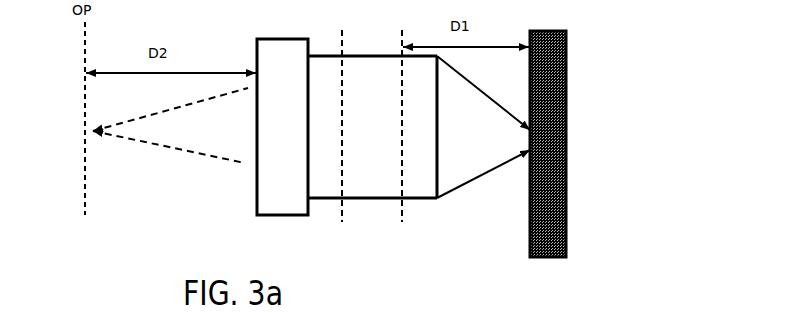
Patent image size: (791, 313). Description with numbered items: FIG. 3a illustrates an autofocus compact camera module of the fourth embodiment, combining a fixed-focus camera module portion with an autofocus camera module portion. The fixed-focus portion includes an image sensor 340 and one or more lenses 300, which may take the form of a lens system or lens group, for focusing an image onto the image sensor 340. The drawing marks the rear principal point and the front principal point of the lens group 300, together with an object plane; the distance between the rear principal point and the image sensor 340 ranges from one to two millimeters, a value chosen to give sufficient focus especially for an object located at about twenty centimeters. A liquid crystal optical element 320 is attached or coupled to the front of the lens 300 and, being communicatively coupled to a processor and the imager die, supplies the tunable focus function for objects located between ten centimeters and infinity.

The lenses 300 is at (325, 155).
The liquid crystal optical element 320 is at (260, 48).
The image sensor 340 is at (567, 198).